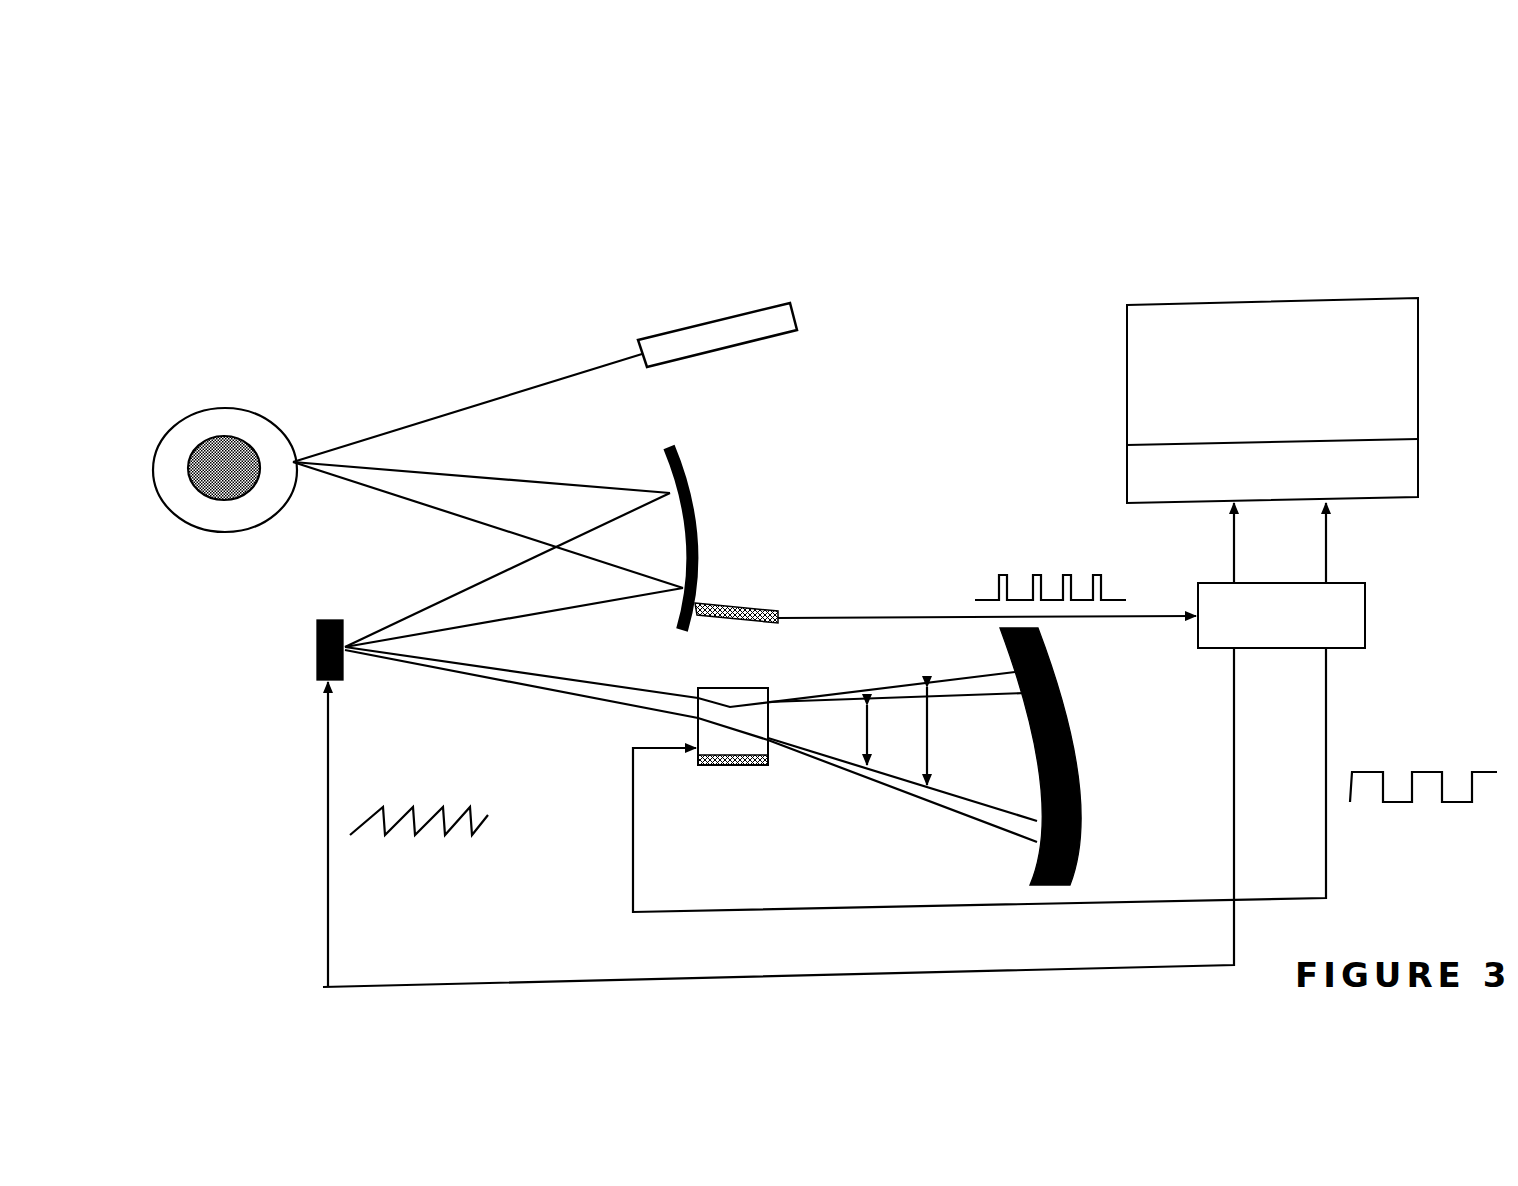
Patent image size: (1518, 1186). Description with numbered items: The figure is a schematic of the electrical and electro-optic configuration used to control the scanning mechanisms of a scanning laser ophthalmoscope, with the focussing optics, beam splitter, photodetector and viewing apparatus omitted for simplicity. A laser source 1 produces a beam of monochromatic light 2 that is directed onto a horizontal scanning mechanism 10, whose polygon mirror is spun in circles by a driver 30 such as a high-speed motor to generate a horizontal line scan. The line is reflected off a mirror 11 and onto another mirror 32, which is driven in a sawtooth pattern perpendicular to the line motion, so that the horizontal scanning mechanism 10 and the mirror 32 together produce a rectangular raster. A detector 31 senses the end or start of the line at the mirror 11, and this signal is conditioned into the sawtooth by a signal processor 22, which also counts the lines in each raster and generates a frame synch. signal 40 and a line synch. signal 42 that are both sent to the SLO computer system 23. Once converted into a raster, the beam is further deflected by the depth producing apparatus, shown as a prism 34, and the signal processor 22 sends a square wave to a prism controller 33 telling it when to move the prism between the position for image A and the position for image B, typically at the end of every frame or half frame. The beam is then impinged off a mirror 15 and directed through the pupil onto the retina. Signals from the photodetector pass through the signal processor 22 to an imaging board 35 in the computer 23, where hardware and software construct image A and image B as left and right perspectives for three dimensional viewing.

The laser source 1 is at (797, 303).
The beam of monochromatic light 2 is at (558, 378).
The horizontal scanning mechanism 10 is at (222, 408).
The driver 30 is at (215, 500).
The mirror 11 is at (695, 505).
The detector 31 is at (728, 604).
The mirror 32 is at (317, 643).
The prism 34 is at (732, 688).
The prism controller 33 is at (715, 765).
The mirror 15 is at (1073, 747).
The signal processor 22 is at (1365, 615).
The SLO computer system 23 is at (1353, 298).
The imaging board 35 is at (1162, 475).
The frame synch. signal 40 is at (1230, 558).
The line synch. signal 42 is at (1325, 540).
The image A is at (867, 738).
The image B is at (912, 752).